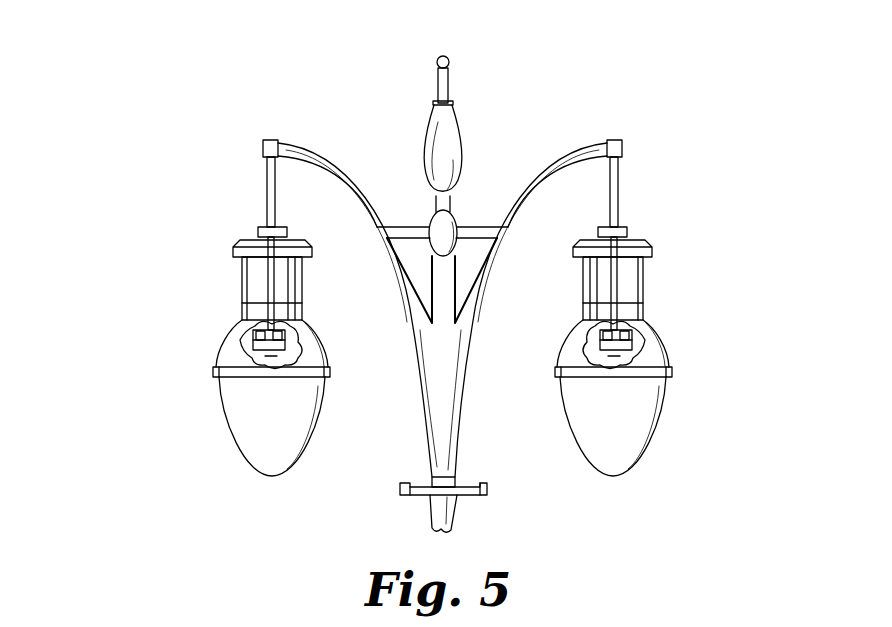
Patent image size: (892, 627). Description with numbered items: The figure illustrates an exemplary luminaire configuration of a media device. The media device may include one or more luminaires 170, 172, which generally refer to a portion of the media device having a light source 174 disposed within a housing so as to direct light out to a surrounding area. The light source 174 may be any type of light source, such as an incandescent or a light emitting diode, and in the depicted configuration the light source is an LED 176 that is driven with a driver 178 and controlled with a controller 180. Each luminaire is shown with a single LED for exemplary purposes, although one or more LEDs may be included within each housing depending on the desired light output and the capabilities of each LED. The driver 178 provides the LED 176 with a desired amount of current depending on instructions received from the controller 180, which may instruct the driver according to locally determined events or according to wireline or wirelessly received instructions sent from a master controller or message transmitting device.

The luminaire 170 is at (647, 457).
The luminaire 172 is at (218, 427).
The light source 174 is at (638, 354).
The LED 176 is at (667, 393).
The driver 178 is at (603, 330).
The controller 180 is at (633, 336).